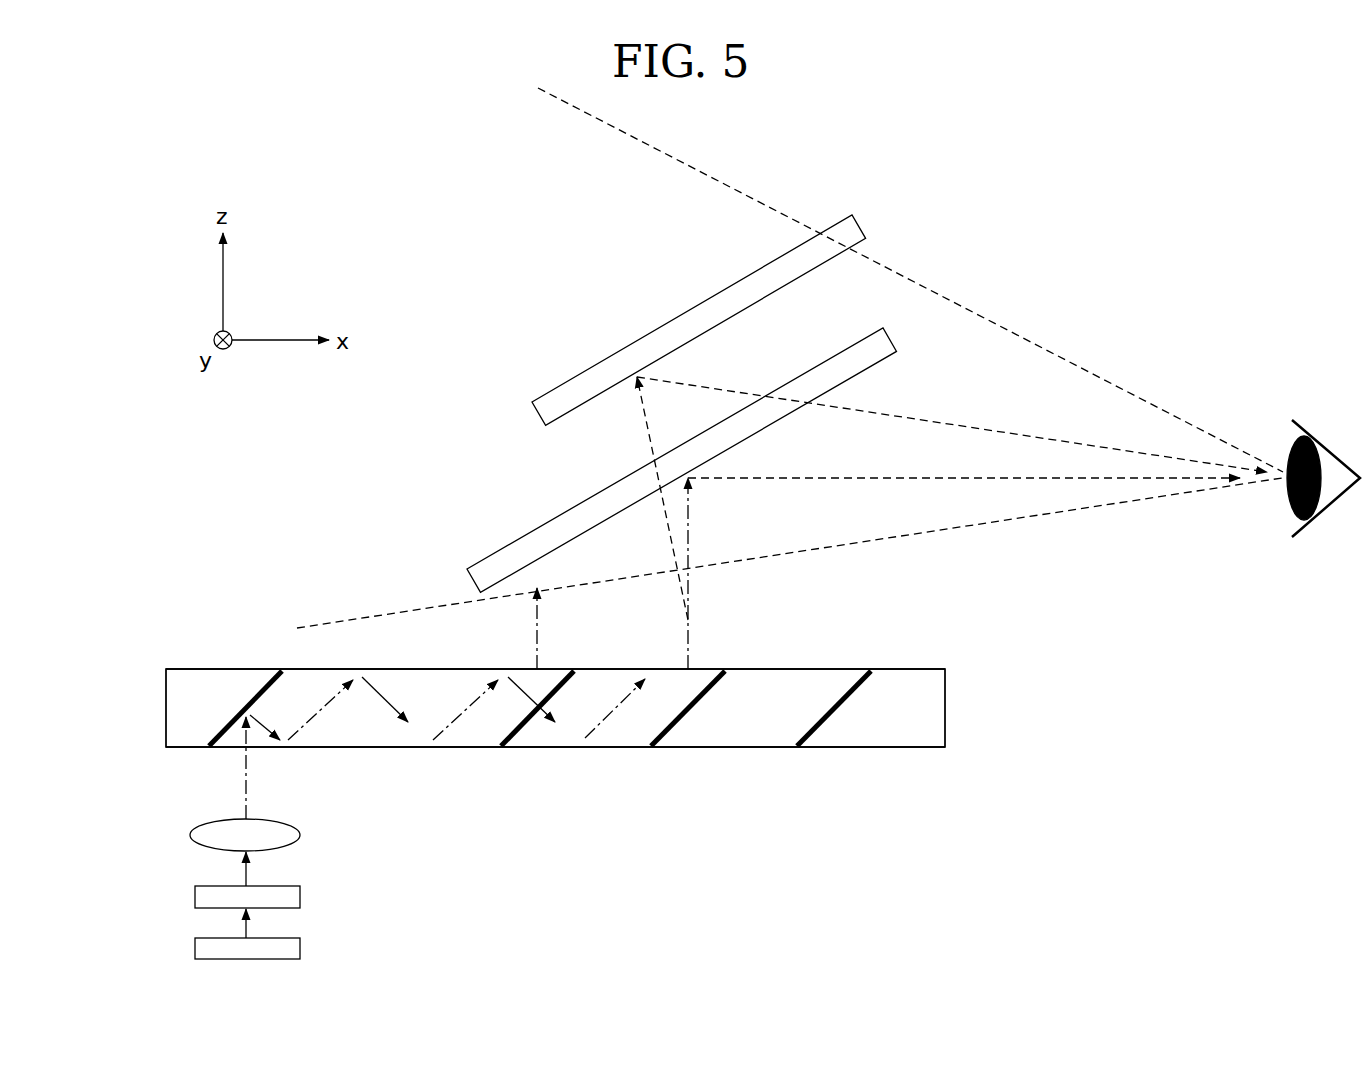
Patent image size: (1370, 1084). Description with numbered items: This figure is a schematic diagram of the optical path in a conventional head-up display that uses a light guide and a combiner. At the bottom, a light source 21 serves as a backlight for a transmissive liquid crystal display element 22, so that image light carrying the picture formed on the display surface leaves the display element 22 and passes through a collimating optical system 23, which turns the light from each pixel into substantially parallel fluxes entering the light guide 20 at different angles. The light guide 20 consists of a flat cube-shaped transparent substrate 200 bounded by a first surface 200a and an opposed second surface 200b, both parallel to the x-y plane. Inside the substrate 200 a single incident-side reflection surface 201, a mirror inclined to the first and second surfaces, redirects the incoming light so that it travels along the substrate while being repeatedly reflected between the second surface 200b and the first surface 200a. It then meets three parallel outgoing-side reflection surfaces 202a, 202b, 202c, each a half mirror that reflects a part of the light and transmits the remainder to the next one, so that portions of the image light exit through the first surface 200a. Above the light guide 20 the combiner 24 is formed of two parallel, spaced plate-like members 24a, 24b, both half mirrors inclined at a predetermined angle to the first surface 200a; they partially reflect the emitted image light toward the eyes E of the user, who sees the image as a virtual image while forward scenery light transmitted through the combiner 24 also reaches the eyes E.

The light guide 20 is at (989, 643).
The light source 21 is at (196, 947).
The display element 22 is at (195, 892).
The collimating optical system 23 is at (196, 830).
The combiner 24 is at (641, 403).
The plate-like member 24a is at (526, 416).
The plate-like member 24b is at (498, 551).
The transparent substrate 200 is at (398, 747).
The first surface 200a is at (930, 644).
The second surface 200b is at (893, 748).
The incident-side reflection surface 201 is at (258, 695).
The outgoing-side reflection surface 202a is at (522, 731).
The outgoing-side reflection surface 202b is at (673, 729).
The outgoing-side reflection surface 202c is at (818, 729).
The eyes E is at (1290, 510).